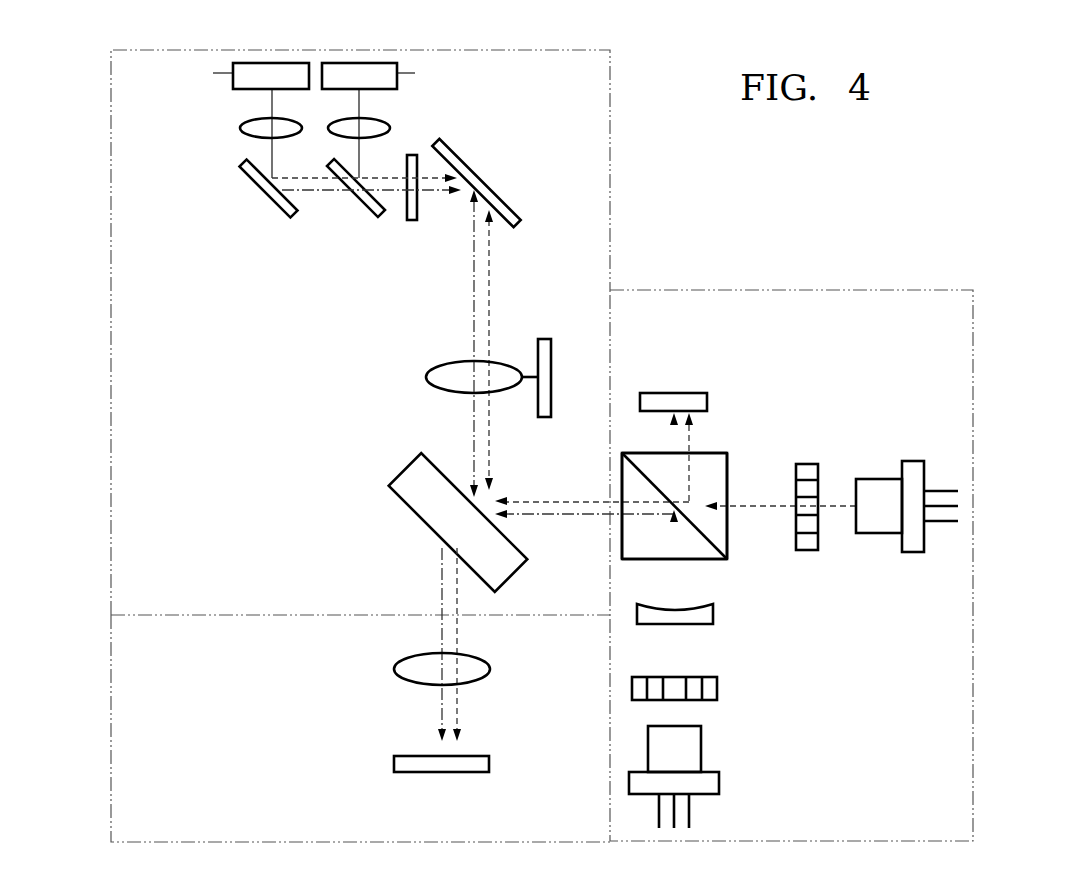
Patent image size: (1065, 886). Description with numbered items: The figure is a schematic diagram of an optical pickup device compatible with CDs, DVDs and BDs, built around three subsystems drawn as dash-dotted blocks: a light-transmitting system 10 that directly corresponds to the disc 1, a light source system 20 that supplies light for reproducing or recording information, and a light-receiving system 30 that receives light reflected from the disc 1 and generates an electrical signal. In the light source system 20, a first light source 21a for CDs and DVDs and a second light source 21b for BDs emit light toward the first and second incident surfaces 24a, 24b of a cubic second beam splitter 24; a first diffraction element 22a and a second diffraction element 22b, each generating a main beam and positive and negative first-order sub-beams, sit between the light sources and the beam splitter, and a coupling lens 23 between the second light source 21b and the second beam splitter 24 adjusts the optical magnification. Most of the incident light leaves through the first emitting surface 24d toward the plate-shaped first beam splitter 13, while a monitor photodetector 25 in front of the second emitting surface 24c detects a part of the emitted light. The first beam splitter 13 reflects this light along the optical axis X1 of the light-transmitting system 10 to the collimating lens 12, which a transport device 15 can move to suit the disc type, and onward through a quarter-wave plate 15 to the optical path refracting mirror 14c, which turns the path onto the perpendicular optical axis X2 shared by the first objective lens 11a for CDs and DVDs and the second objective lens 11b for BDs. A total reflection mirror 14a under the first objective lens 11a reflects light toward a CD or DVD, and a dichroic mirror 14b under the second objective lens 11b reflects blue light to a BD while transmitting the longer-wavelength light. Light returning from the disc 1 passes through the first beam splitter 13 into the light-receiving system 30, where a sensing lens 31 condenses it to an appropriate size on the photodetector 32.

The disc 1 is at (323, 63).
The light-transmitting system 10 is at (111, 523).
The first objective lens 11a is at (295, 127).
The second objective lens 11b is at (385, 128).
The collimating lens 12 is at (426, 377).
The first beam splitter 13 is at (415, 507).
The total reflection mirror 14a is at (280, 207).
The dichroic mirror 14b is at (363, 208).
The optical path refracting mirror 14c is at (482, 177).
The quarter-wave plate 15 is at (417, 219).
The light source system 20 is at (975, 566).
The first light source 21a is at (914, 461).
The second light source 21b is at (720, 784).
The first diffraction element 22a is at (806, 464).
The second diffraction element 22b is at (718, 689).
The coupling lens 23 is at (715, 616).
The second beam splitter 24 is at (748, 571).
The first incident surface 24a is at (728, 478).
The second incident surface 24b is at (642, 560).
The second emitting surface 24c is at (708, 453).
The first emitting surface 24d is at (622, 478).
The monitor photodetector 25 is at (676, 393).
The light-receiving system 30 is at (111, 732).
The sensing lens 31 is at (400, 669).
The photodetector 32 is at (394, 764).
The optical axis of the light-transmitting system X1 is at (490, 287).
The optical axis of the objective lenses X2 is at (393, 191).